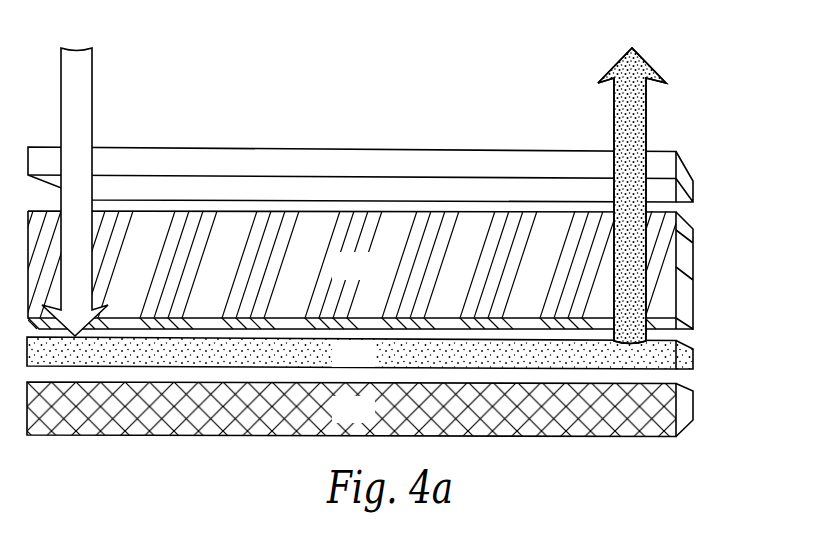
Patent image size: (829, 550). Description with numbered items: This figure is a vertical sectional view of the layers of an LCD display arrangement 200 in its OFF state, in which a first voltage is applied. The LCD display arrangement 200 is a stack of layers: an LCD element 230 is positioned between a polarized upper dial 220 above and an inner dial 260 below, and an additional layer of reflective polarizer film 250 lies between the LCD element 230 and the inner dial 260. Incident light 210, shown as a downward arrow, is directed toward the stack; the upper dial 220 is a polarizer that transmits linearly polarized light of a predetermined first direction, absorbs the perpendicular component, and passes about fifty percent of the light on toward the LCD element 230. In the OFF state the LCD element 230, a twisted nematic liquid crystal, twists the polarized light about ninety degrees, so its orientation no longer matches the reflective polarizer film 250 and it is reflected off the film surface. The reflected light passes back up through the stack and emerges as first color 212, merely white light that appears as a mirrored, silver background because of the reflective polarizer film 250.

The LCD display arrangement 200 is at (386, 292).
The incident light 210 is at (75, 173).
The first color 212 is at (632, 181).
The upper dial 220 is at (372, 176).
The LCD element 230 is at (372, 277).
The reflective polarizer film 250 is at (372, 365).
The inner dial 260 is at (372, 421).